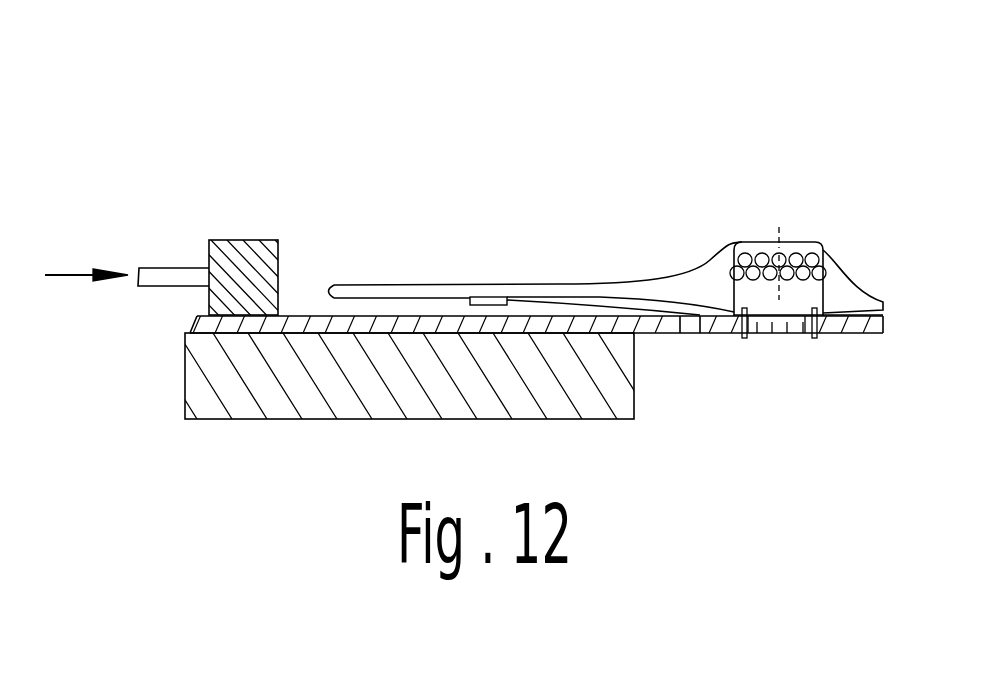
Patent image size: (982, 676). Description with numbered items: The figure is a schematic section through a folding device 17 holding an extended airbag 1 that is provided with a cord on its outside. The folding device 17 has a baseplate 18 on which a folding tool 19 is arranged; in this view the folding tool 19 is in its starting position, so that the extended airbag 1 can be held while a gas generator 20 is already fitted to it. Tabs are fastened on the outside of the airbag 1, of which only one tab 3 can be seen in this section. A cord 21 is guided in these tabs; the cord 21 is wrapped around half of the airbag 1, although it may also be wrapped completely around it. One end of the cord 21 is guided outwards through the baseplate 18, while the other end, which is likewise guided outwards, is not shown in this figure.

The airbag 1 is at (407, 282).
The tab 3 is at (490, 300).
The folding device 17 is at (182, 428).
The baseplate 18 is at (304, 392).
The folding tool 19 is at (229, 251).
The gas generator 20 is at (745, 260).
The cord 21 is at (687, 316).